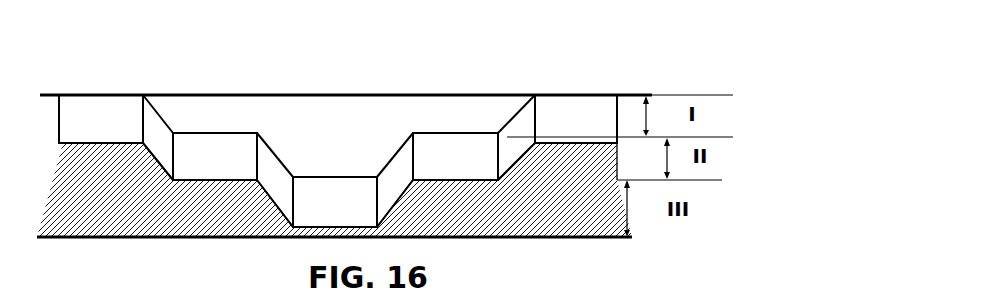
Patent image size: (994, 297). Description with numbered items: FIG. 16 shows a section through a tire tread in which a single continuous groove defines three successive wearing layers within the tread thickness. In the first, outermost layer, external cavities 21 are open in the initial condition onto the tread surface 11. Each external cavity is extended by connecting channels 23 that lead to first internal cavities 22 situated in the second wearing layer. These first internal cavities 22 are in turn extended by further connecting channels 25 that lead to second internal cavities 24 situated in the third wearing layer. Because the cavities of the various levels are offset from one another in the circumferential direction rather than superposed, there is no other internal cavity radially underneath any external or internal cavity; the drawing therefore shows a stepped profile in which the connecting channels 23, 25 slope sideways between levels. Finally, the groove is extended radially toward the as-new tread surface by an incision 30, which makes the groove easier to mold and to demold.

The tread surface 11 is at (81, 86).
The external cavities 21 is at (120, 122).
The first internal cavities 22 is at (212, 145).
The connecting channels 23 is at (157, 135).
The second internal cavities 24 is at (310, 167).
The connecting channels 25 is at (278, 177).
The incision 30 is at (352, 155).